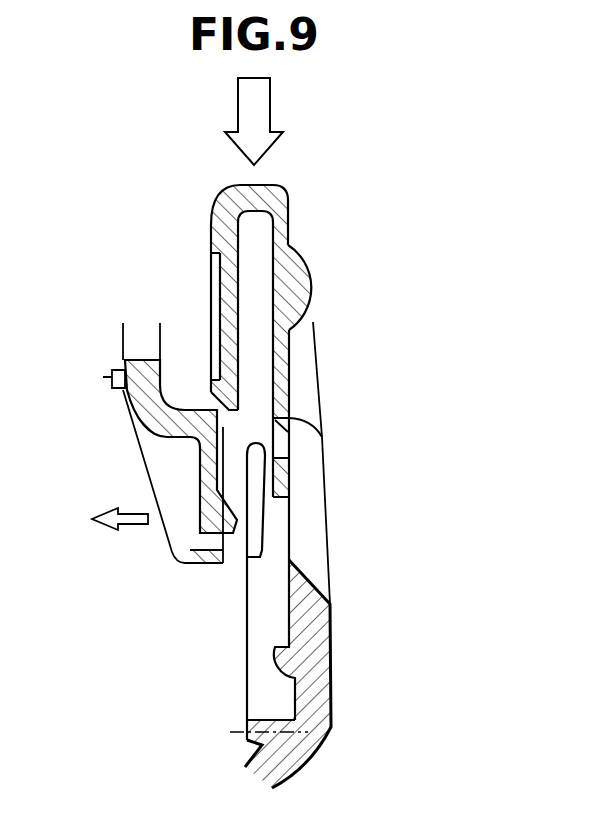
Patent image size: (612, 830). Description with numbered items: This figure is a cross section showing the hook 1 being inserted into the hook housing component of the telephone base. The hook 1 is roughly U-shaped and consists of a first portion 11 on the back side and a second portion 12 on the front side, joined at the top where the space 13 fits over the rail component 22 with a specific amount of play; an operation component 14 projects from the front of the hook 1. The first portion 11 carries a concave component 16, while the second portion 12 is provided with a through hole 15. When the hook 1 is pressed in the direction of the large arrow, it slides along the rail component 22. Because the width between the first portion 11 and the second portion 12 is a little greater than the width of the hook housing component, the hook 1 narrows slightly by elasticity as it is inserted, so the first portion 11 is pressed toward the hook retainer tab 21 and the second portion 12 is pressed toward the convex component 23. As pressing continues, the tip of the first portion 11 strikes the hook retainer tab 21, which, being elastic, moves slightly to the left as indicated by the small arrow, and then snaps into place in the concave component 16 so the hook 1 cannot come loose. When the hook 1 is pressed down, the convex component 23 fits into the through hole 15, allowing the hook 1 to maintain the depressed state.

The hook 1 is at (285, 191).
The first portion 11 is at (252, 230).
The second portion 12 is at (280, 362).
The space 13 is at (220, 205).
The operation component 14 is at (302, 285).
The through hole 15 is at (290, 418).
The concave component 16 is at (215, 303).
The hook retainer tab 21 is at (200, 522).
The rail component 22 is at (253, 543).
The convex component 23 is at (273, 664).